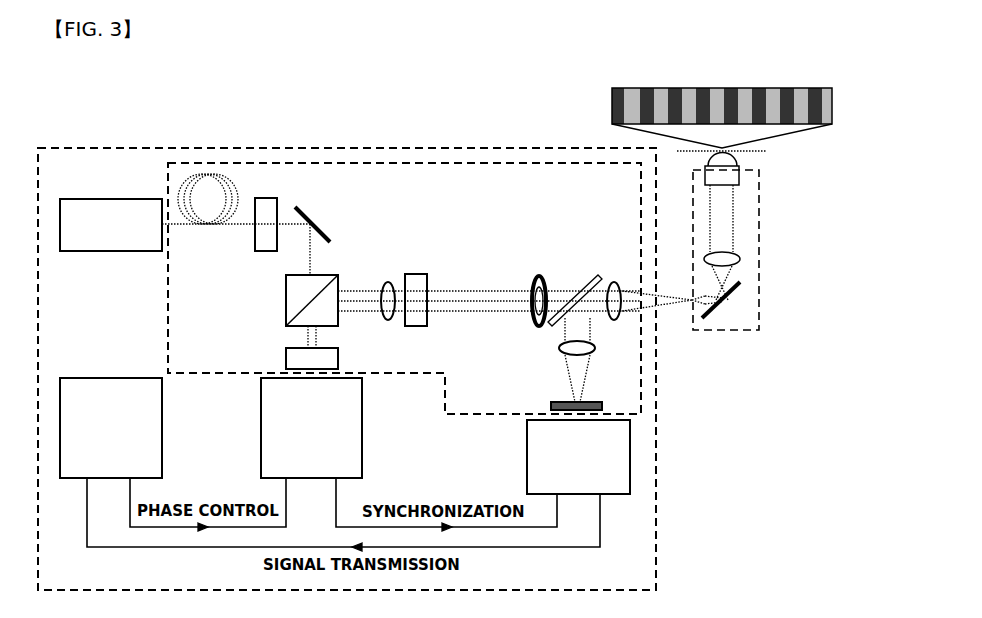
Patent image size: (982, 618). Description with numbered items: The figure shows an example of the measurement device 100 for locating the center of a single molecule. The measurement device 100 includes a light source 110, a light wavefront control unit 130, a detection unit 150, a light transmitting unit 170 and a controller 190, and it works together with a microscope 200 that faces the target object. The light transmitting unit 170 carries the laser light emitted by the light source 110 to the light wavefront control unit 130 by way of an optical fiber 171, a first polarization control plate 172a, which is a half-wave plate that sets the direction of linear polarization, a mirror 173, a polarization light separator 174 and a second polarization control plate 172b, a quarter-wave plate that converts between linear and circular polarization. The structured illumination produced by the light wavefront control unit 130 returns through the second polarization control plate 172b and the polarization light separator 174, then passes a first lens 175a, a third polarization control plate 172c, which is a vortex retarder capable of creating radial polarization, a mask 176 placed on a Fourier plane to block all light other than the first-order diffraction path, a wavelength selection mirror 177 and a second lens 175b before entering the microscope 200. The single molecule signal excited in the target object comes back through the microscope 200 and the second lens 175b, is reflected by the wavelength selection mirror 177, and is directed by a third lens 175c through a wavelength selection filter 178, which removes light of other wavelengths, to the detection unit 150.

The measurement device 100 is at (254, 148).
The light transmitting unit 170 is at (386, 163).
The light source 110 is at (98, 253).
The optical fiber 171 is at (192, 215).
The first polarization control plate 172a is at (270, 197).
The mirror 173 is at (331, 241).
The polarization light separator 174 is at (286, 285).
The second polarization control plate 172b is at (286, 354).
The first lens 175a is at (389, 282).
The third polarization control plate 172c is at (420, 272).
The mask 176 is at (537, 278).
The wavelength selection mirror 177 is at (590, 278).
The second lens 175b is at (614, 321).
The third lens 175c is at (559, 345).
The wavelength selection filter 178 is at (551, 402).
The controller 190 is at (163, 433).
The light wavefront control unit 130 is at (363, 442).
The detection unit 150 is at (527, 464).
The microscope 200 is at (759, 237).